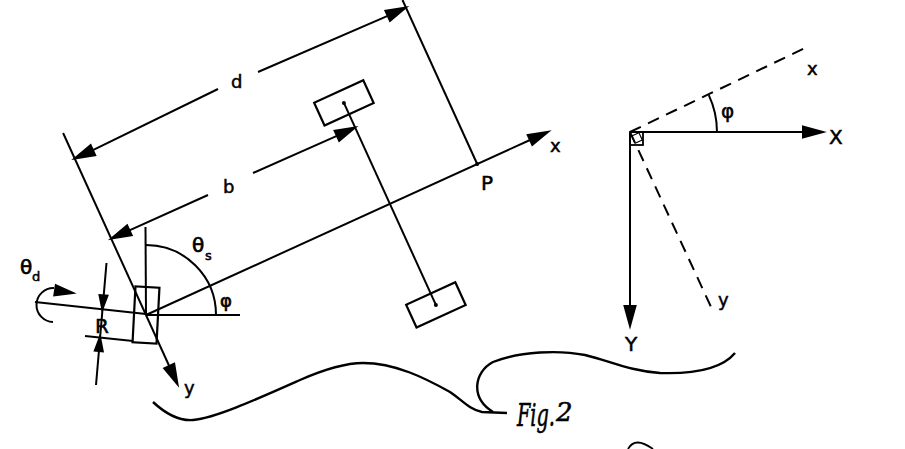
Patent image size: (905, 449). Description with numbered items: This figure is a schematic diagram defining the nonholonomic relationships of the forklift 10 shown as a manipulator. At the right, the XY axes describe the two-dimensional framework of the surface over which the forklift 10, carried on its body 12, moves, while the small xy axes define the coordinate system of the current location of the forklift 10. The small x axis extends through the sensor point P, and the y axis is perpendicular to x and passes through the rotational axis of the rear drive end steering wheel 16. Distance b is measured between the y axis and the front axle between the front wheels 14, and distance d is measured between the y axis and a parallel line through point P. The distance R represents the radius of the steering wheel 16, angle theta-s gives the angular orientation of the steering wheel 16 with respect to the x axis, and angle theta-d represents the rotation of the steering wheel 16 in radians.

The forklift 10 is at (390, 204).
The body 12 is at (140, 348).
The front wheels 14 is at (344, 102).
The rear drive end steering wheel 16 is at (436, 304).